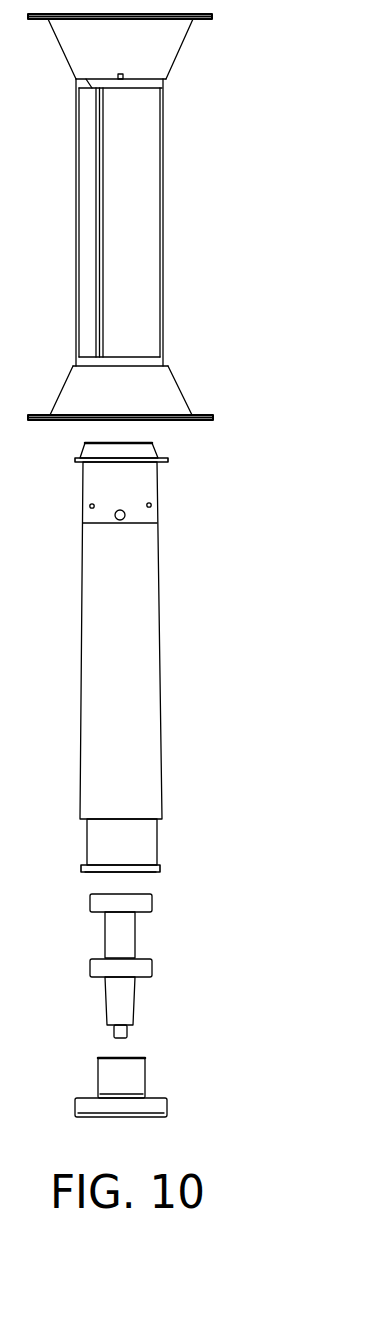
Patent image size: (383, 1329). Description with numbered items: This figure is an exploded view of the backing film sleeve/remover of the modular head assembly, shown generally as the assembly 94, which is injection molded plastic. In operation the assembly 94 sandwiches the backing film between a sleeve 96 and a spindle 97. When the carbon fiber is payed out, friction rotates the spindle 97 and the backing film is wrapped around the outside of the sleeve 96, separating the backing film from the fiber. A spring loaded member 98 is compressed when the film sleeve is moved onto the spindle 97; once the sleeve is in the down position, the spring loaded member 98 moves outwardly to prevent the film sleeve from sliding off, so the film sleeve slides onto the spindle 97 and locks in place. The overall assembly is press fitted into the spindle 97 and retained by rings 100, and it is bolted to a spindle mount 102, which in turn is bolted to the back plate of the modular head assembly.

The backing film sleeve/remover assembly 94 is at (263, 223).
The sleeve 96 is at (163, 313).
The spindle 97 is at (159, 647).
The spring loaded member 98 is at (157, 483).
The rings 100 is at (155, 927).
The spindle mount 102 is at (175, 1073).